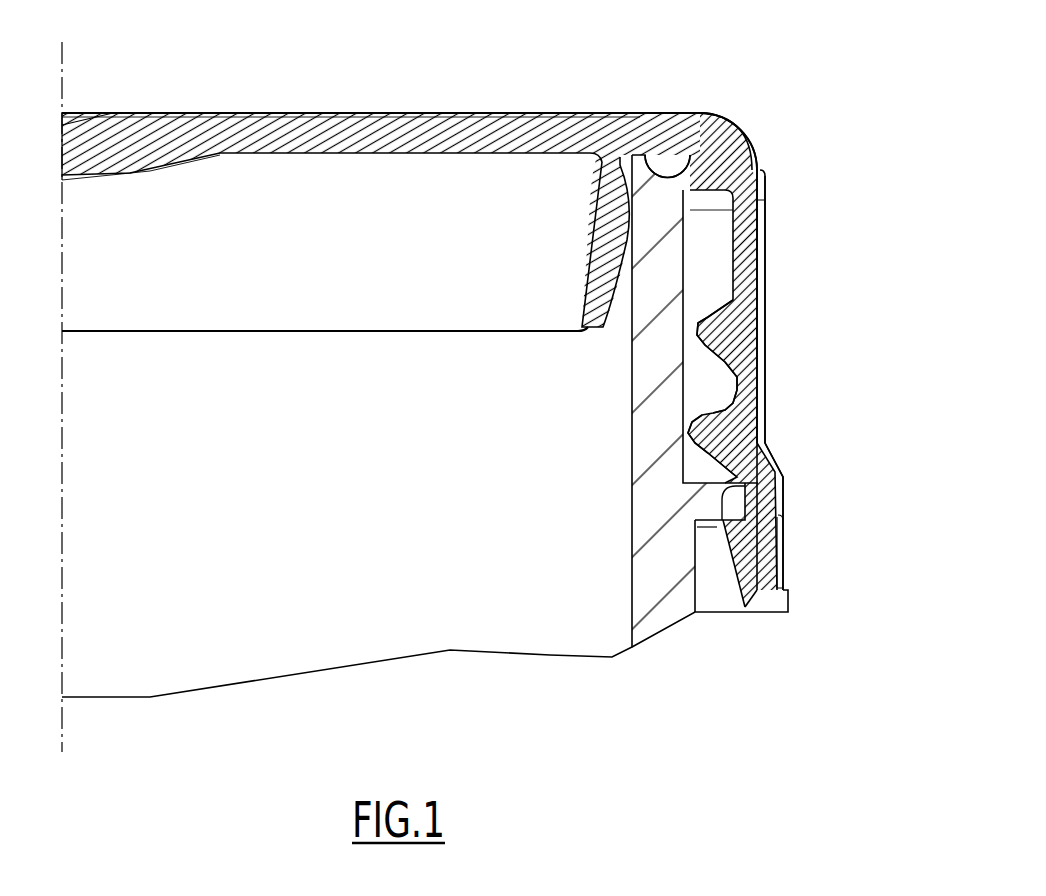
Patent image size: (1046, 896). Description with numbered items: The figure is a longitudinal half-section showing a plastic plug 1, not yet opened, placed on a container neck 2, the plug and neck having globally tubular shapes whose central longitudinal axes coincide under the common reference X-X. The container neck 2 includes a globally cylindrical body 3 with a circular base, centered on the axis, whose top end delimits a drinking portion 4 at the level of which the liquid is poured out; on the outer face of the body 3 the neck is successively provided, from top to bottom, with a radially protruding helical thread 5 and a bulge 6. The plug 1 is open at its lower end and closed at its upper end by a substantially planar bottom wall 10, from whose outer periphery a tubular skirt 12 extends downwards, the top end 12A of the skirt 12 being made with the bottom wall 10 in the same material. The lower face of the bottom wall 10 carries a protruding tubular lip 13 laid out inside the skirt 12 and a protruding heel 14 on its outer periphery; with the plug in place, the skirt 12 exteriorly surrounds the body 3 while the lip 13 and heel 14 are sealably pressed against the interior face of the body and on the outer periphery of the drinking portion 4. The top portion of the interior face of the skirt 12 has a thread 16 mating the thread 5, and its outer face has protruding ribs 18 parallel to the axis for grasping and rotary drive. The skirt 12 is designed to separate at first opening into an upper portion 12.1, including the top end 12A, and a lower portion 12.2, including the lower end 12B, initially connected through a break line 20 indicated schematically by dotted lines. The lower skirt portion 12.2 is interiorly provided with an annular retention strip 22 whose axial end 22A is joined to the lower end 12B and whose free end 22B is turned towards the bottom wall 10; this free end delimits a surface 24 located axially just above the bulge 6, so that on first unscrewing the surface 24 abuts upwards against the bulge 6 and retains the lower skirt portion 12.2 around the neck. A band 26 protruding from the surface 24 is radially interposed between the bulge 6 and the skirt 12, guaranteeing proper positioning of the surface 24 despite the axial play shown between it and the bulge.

The plug 1 is at (290, 73).
The container neck 2 is at (624, 571).
The body 3 is at (648, 403).
The drinking portion 4 is at (657, 165).
The helical thread 5 is at (710, 362).
The bulge 6 is at (750, 448).
The bottom wall 10 is at (445, 130).
The tubular skirt 12 is at (848, 296).
The top end of the skirt 12A is at (758, 168).
The lower end of the skirt 12B is at (773, 610).
The upper skirt portion 12.1 is at (752, 245).
The lower skirt portion 12.2 is at (786, 578).
The tubular lip 13 is at (596, 278).
The heel 14 is at (666, 178).
The thread 16 is at (700, 322).
The ribs 18 is at (760, 223).
The break line 20 is at (768, 471).
The retention strip 22 is at (724, 559).
The axial end of the strip 22A is at (742, 592).
The free end of the strip 22B is at (705, 540).
The surface 24 is at (727, 511).
The band 26 is at (760, 510).